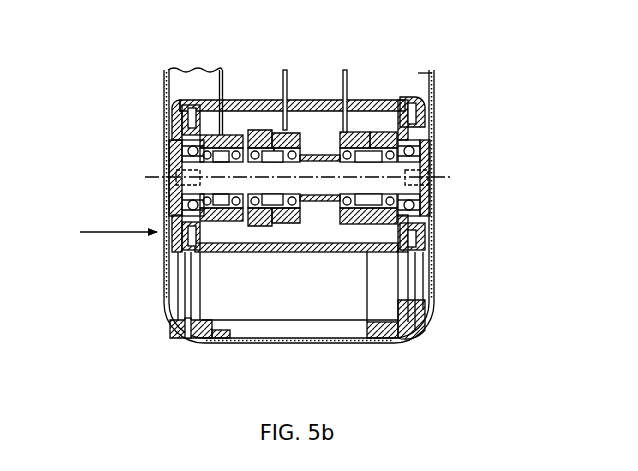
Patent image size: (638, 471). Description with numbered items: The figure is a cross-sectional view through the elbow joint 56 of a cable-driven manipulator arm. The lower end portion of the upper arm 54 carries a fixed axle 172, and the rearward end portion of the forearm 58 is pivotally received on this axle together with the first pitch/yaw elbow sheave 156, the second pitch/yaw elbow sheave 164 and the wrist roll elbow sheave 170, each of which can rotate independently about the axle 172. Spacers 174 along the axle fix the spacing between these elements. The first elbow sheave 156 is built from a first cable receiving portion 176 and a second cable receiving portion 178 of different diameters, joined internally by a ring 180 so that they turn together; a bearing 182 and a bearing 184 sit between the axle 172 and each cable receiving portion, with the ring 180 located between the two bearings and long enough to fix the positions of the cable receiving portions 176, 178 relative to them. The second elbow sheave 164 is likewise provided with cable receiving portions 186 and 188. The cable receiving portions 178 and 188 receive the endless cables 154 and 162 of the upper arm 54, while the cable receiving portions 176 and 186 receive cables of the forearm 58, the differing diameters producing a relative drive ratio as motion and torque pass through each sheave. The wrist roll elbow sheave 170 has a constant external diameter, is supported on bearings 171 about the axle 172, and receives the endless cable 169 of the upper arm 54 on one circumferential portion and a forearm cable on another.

The upper arm 54 is at (163, 100).
The elbow joint 56 is at (102, 233).
The forearm 58 is at (423, 112).
The endless cable 154 is at (284, 70).
The first pitch/yaw elbow sheave 156 is at (262, 217).
The endless cable 162 is at (346, 70).
The second pitch/yaw elbow sheave 164 is at (360, 222).
The endless cable 169 is at (221, 68).
The wrist roll elbow sheave 170 is at (225, 217).
The bearings 171 is at (174, 252).
The fixed axle 172 is at (178, 167).
The spacers 174 is at (178, 187).
The first cable receiving portion 176 is at (245, 217).
The second cable receiving portion 178 is at (292, 217).
The ring 180 is at (252, 132).
The bearing 182 is at (246, 133).
The bearing 184 is at (299, 132).
The cable receiving portion 186 is at (381, 132).
The cable receiving portion 188 is at (357, 132).